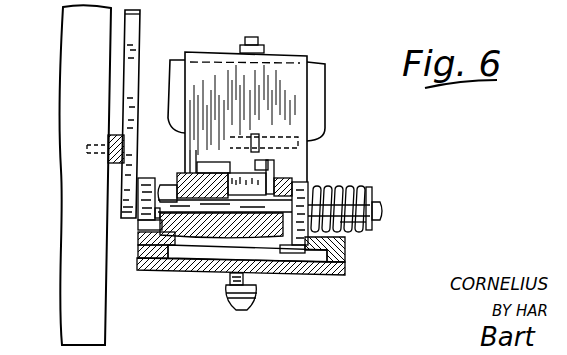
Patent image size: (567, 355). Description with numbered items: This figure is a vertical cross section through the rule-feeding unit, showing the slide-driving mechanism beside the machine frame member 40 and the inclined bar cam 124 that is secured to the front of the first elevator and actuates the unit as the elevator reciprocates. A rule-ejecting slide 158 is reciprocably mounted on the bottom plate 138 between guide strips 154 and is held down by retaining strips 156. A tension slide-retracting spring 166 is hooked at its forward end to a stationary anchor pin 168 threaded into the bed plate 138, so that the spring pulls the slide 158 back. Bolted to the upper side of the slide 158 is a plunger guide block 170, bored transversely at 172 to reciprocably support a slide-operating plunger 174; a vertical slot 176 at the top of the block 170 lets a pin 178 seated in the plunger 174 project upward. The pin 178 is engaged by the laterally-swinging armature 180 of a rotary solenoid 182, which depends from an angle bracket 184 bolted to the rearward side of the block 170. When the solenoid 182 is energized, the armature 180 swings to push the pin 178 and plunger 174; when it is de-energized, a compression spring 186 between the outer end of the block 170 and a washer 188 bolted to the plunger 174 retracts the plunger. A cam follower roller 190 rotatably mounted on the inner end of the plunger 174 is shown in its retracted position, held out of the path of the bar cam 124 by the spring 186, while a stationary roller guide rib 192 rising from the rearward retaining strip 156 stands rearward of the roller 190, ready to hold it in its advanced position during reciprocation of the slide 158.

The frame member 40 is at (70, 10).
The inclined bar cam 124 is at (128, 31).
The bottom plate 138 is at (203, 272).
The guide strips 154 is at (138, 252).
The retaining strips 156 is at (138, 238).
The rule-ejecting slide 158 is at (178, 272).
The tension slide-retracting spring 166 is at (255, 302).
The stationary anchor pin 168 is at (243, 310).
The plunger guide block 170 is at (307, 183).
The transverse bore 172 is at (173, 174).
The slide-operating plunger 174 is at (351, 222).
The vertical slot 176 is at (240, 150).
The pin 178 is at (270, 163).
The armature 180 is at (280, 167).
The rotary solenoid 182 is at (320, 98).
The angle bracket 184 is at (369, 7).
The compression spring 186 is at (350, 233).
The washer 188 is at (375, 202).
The cam follower roller 190 is at (140, 190).
The roller guide rib 192 is at (138, 224).